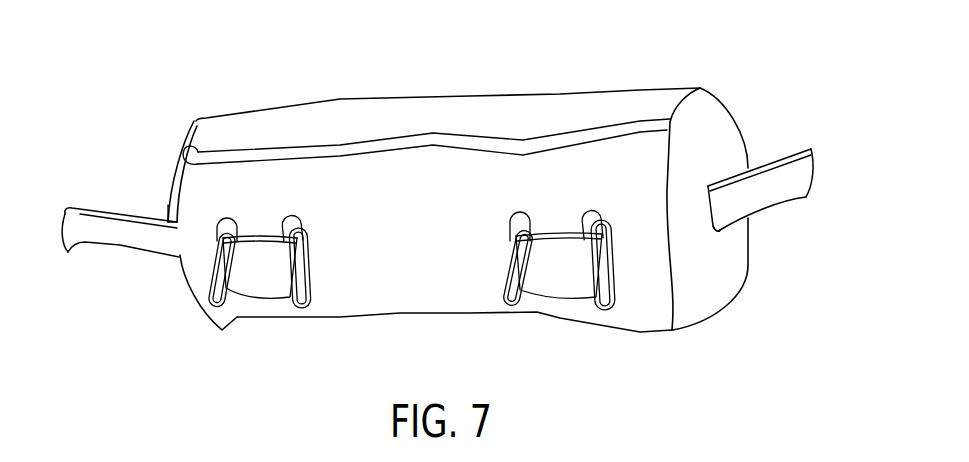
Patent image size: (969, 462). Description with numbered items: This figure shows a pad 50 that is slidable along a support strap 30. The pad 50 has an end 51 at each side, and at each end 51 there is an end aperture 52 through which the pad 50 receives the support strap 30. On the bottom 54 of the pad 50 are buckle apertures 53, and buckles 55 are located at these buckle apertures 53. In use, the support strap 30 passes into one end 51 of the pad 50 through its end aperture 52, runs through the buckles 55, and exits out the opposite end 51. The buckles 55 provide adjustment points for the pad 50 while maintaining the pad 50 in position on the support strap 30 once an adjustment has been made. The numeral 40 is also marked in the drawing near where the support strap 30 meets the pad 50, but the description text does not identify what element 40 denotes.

The support strap 30 is at (76, 215).
The strap attachment 40 is at (168, 213).
The pad 50 is at (412, 103).
The end 51 is at (184, 140).
The end aperture 52 is at (710, 186).
The buckle aperture 53 is at (294, 218).
The bottom 54 is at (394, 238).
The buckle 55 is at (215, 238).